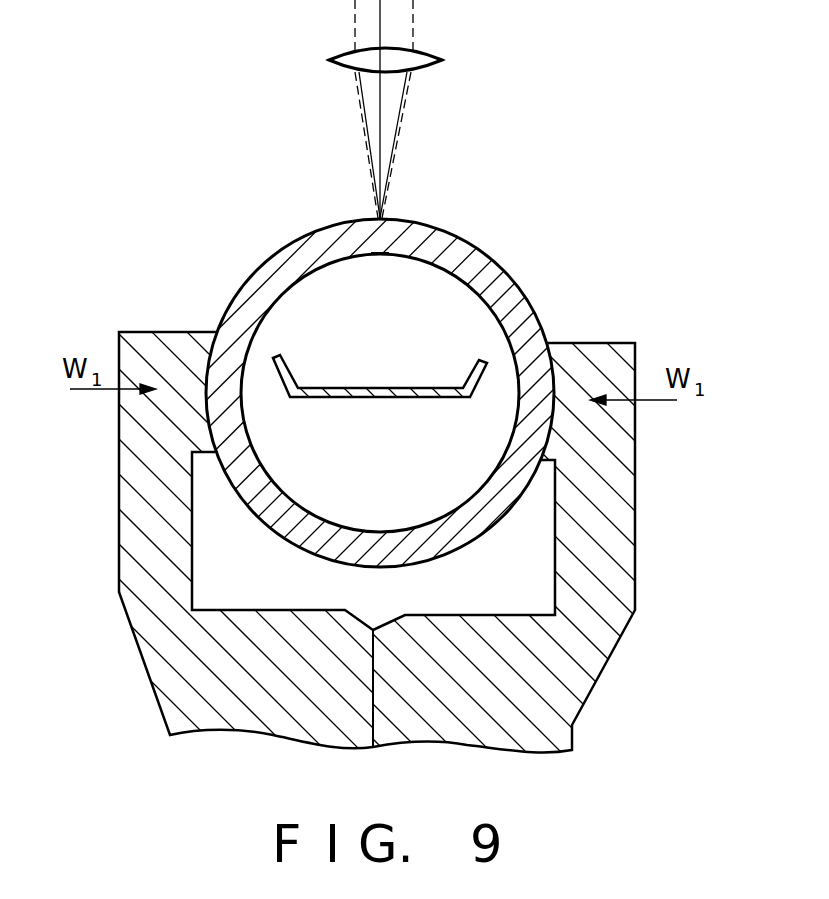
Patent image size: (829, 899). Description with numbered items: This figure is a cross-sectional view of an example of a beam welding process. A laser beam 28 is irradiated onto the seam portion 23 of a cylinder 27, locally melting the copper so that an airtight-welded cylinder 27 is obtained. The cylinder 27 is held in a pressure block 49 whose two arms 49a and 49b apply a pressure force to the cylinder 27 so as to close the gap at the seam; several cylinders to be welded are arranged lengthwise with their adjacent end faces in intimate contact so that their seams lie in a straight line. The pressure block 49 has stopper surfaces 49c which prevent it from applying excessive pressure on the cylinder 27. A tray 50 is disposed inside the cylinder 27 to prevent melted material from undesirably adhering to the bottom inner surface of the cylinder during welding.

The seam portion 23 is at (380, 256).
The cylinder 27 is at (481, 258).
The laser beam 28 is at (382, 118).
The pressure block 49 is at (414, 550).
The arm 49a is at (128, 497).
The arm 49b is at (610, 530).
The stopper surfaces 49c is at (373, 688).
The tray 50 is at (398, 398).